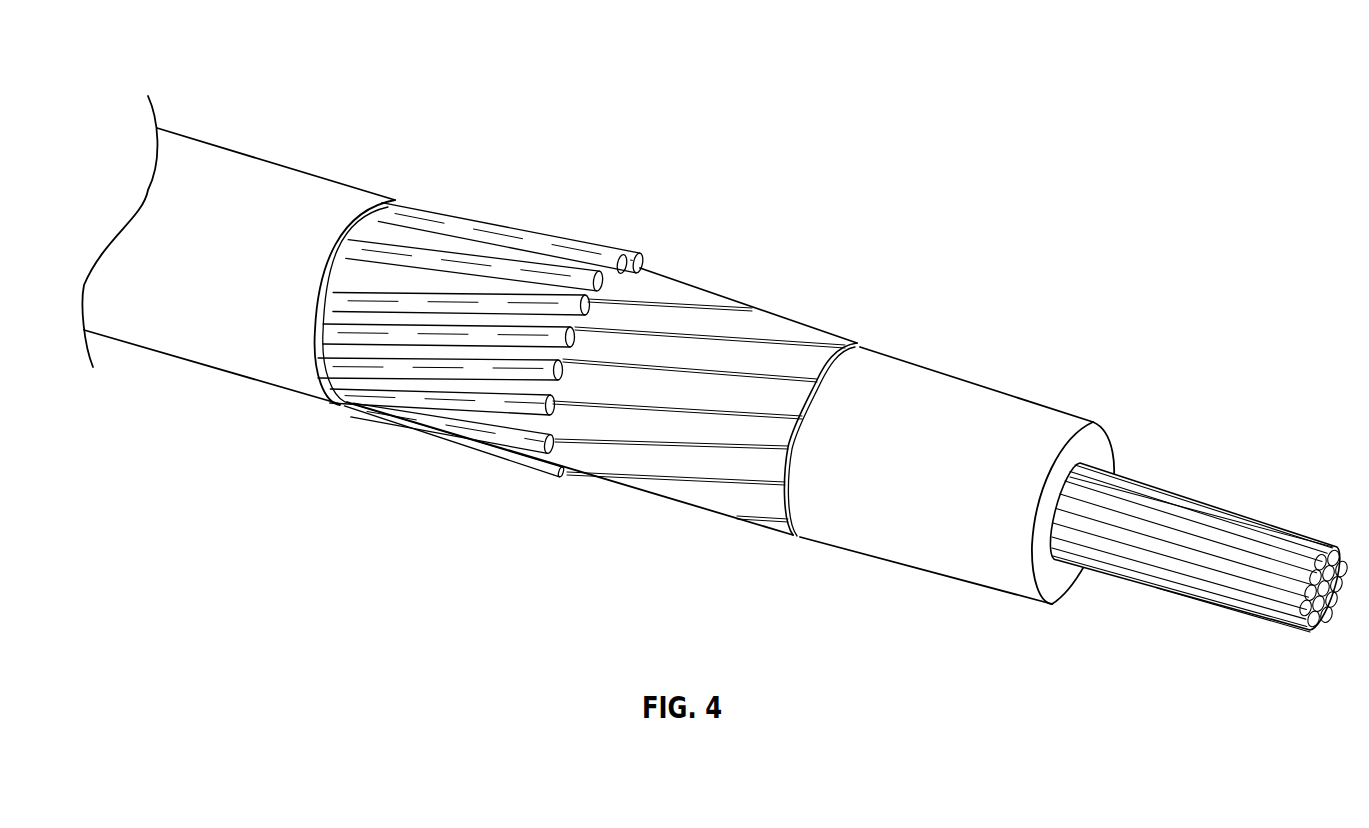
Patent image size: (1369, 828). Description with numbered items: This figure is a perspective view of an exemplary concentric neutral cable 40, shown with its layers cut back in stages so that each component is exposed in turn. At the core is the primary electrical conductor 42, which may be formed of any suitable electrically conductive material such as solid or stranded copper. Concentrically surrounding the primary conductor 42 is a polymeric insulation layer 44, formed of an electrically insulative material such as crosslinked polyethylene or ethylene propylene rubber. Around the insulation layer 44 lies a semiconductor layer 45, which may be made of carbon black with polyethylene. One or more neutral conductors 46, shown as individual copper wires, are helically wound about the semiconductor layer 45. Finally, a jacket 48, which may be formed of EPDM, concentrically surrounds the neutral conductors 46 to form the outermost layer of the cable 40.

The cable 40 is at (195, 55).
The primary electrical conductor 42 is at (1180, 543).
The polymeric insulation layer 44 is at (955, 393).
The semiconductor layer 45 is at (752, 325).
The neutral conductors 46 is at (473, 303).
The jacket 48 is at (223, 164).